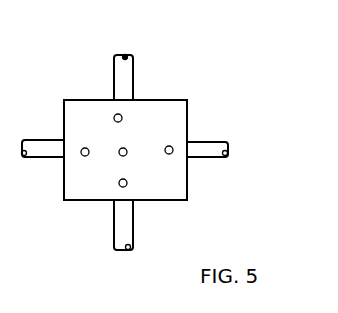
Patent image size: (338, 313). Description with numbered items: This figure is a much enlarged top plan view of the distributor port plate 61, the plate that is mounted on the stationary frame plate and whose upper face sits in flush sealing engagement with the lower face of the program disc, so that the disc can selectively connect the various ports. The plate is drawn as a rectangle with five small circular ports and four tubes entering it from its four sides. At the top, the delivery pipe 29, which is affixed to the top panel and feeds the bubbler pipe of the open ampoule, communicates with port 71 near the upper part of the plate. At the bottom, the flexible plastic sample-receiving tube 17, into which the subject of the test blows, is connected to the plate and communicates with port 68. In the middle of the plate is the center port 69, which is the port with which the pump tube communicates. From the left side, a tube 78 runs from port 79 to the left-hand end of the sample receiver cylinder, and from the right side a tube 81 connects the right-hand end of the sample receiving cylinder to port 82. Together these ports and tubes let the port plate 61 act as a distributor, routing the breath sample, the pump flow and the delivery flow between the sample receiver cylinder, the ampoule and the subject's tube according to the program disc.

The distributor port plate 61 is at (82, 112).
The delivery pipe 29 is at (126, 55).
The sample-receiving tube 17 is at (131, 248).
The tube 78 is at (35, 140).
The tube 81 is at (219, 142).
The port 71 is at (121, 115).
The port 79 is at (83, 156).
The center port 69 is at (127, 155).
The port 82 is at (171, 146).
The port 68 is at (127, 185).